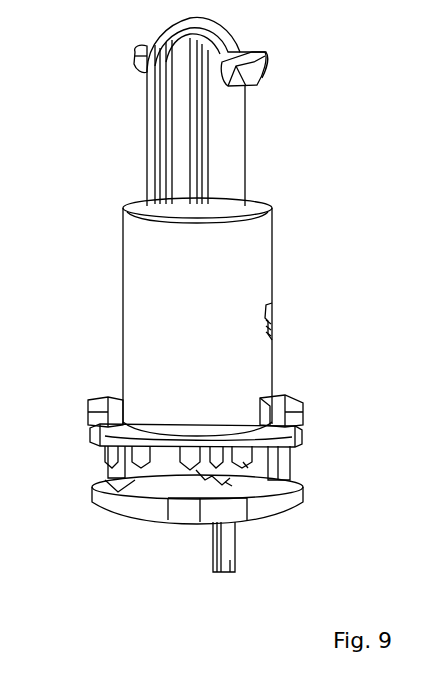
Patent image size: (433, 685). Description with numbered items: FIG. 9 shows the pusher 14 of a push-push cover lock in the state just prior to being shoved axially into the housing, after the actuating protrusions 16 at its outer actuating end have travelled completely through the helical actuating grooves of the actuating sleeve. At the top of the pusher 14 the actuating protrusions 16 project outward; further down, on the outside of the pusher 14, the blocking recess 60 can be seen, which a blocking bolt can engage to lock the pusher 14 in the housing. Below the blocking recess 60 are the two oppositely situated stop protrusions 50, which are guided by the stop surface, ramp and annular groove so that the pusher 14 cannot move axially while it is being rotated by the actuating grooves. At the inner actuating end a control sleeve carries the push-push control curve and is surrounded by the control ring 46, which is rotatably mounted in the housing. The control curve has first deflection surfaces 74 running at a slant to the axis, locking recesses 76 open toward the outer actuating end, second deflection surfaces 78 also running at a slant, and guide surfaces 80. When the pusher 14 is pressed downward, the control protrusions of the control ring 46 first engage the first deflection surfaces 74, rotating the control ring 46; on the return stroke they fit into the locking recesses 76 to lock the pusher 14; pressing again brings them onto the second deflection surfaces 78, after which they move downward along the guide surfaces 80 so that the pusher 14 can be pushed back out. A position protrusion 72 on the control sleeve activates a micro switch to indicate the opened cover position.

The pusher 14 is at (252, 250).
The actuating protrusions 16 is at (135, 52).
The control ring 46 is at (105, 503).
The stop protrusions 50 is at (100, 400).
The blocking recess 60 is at (264, 316).
The position protrusion 72 is at (228, 558).
The first deflection surfaces 74 is at (200, 470).
The locking recesses 76 is at (212, 478).
The second deflection surfaces 78 is at (243, 462).
The guide surfaces 80 is at (228, 483).